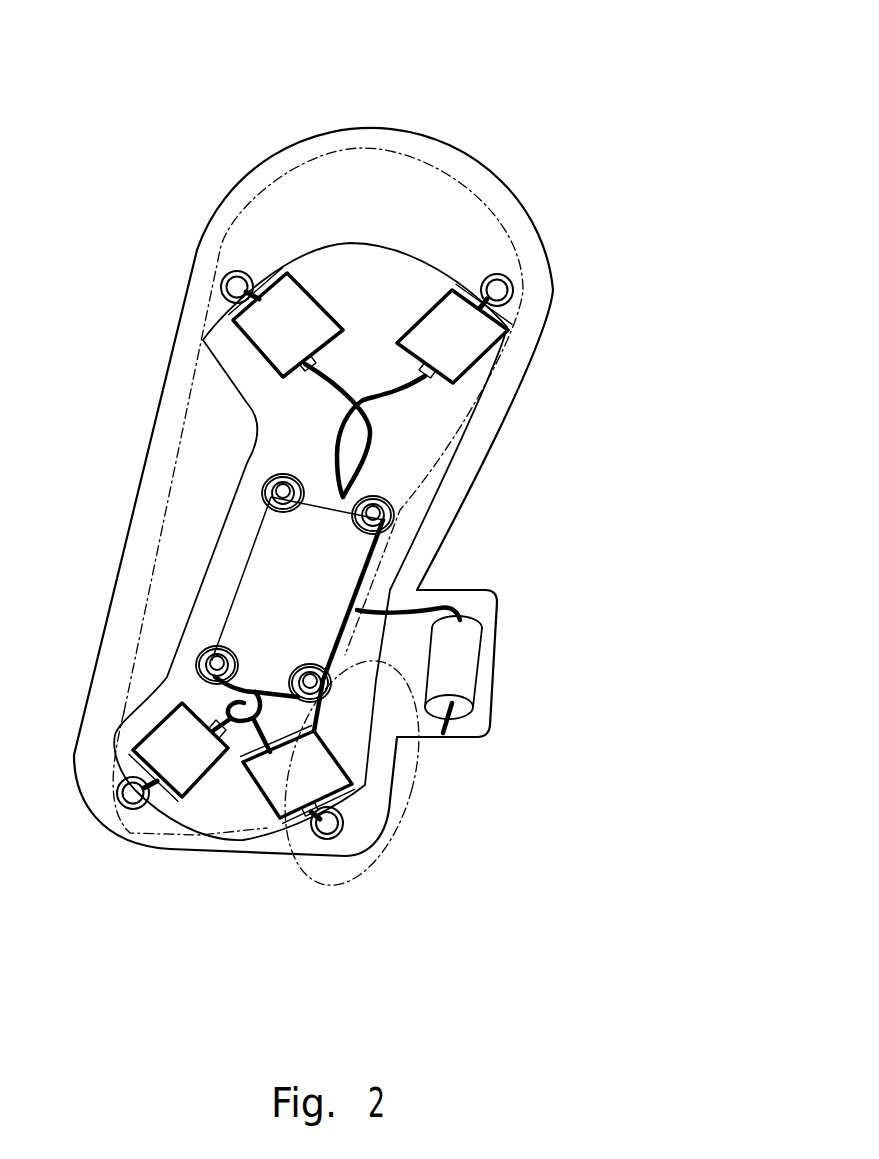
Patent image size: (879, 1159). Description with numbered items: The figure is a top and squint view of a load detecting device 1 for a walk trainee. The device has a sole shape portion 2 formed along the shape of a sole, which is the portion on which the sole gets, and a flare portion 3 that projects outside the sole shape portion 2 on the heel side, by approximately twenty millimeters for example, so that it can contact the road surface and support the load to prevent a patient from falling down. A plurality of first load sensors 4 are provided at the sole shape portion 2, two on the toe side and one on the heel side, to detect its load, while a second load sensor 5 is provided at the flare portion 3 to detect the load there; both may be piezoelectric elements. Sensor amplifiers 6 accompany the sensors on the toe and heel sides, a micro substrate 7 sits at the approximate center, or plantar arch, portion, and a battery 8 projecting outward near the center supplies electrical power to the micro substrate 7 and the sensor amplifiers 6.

The load detecting device 1 is at (522, 97).
The sole shape portion 2 is at (505, 245).
The flare portion 3 is at (405, 812).
The first load sensor 4 is at (222, 281).
The second load sensor 5 is at (328, 823).
The sensor amplifier 6 is at (257, 330).
The micro substrate 7 is at (290, 585).
The battery 8 is at (470, 662).